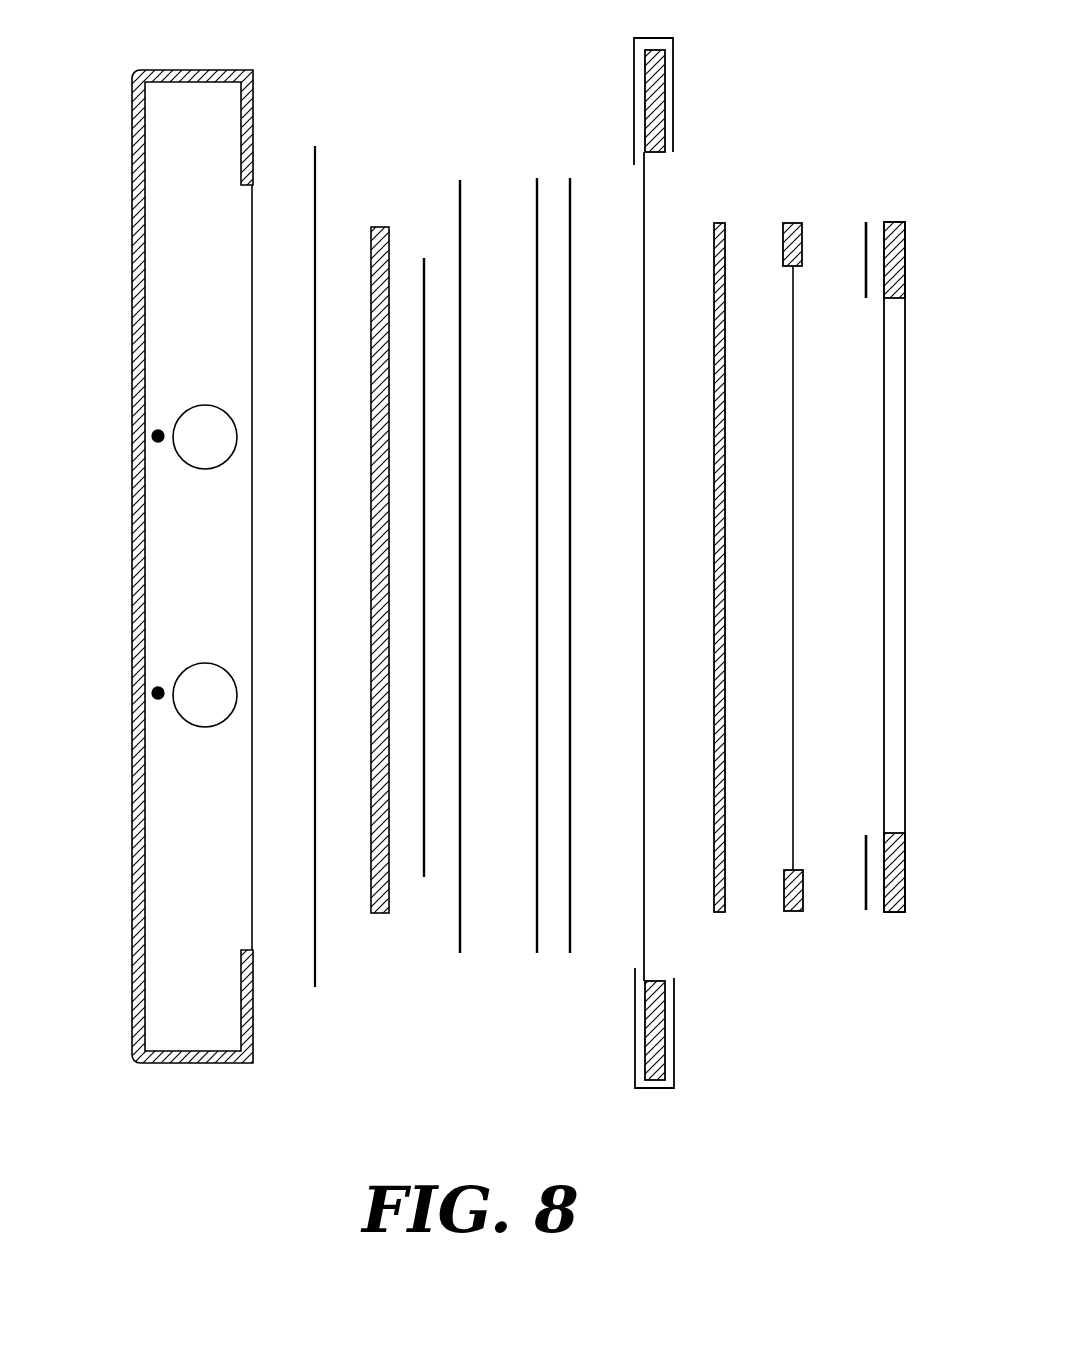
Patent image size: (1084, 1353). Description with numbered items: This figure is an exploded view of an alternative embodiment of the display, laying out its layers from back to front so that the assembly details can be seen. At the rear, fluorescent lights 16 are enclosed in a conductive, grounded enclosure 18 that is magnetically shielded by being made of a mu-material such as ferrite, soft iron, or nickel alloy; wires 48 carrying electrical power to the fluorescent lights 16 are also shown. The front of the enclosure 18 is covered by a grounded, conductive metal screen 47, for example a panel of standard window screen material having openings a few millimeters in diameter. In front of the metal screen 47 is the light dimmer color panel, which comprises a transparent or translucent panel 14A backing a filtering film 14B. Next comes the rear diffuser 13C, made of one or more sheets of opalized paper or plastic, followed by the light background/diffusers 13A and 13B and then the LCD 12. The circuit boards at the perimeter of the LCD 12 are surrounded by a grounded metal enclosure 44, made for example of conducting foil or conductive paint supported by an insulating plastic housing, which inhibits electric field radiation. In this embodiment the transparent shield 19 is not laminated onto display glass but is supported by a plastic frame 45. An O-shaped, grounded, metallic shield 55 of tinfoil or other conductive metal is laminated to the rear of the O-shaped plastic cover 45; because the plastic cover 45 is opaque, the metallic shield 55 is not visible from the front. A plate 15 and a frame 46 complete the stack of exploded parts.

The enclosure 18 is at (132, 364).
The fluorescent lights 16 is at (212, 406).
The wires 48 is at (158, 442).
The metal screen 47 is at (316, 150).
The transparent or translucent panel 14A is at (380, 227).
The filtering film 14B is at (424, 258).
The rear diffuser 13C is at (460, 181).
The light background/diffuser 13B is at (536, 188).
The light background/diffuser 13A is at (570, 188).
The LCD 12 is at (645, 310).
The grounded metal enclosure 44 is at (655, 38).
The plate 15 is at (722, 223).
The plastic frame 45 is at (792, 223).
The transparent shield 19 is at (794, 507).
The metallic shield 55 is at (865, 237).
The frame 46 is at (905, 262).